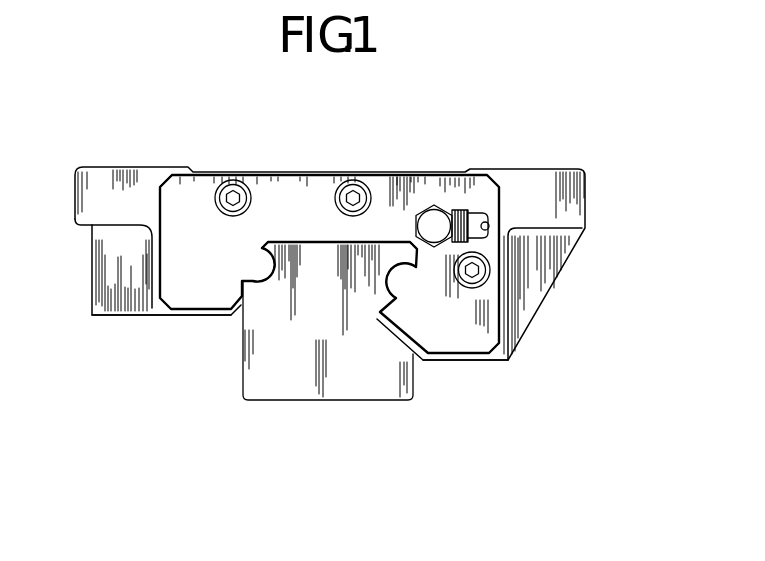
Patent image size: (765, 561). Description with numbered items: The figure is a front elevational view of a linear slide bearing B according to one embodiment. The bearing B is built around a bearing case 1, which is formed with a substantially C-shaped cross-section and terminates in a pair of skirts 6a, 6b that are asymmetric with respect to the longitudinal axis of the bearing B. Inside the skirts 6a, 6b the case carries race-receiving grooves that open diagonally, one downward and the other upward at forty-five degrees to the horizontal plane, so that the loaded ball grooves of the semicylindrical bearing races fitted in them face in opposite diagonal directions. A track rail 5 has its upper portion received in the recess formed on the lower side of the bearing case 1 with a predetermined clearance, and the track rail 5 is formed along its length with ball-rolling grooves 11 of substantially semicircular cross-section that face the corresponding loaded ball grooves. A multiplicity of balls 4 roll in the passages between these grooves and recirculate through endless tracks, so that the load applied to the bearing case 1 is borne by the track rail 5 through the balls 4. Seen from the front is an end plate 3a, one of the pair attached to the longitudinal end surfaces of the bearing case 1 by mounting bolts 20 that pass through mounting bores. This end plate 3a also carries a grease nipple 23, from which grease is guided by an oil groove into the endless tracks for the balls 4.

The bearing case 1 is at (517, 163).
The end plate 3a is at (153, 196).
The balls 4 is at (382, 278).
The track rail 5 is at (243, 345).
The skirt 6a is at (155, 314).
The skirt 6b is at (498, 362).
The ball-rolling grooves 11 is at (258, 277).
The mounting bolts 20 is at (237, 194).
The grease nipple 23 is at (466, 218).
The linear slide bearing B is at (588, 166).